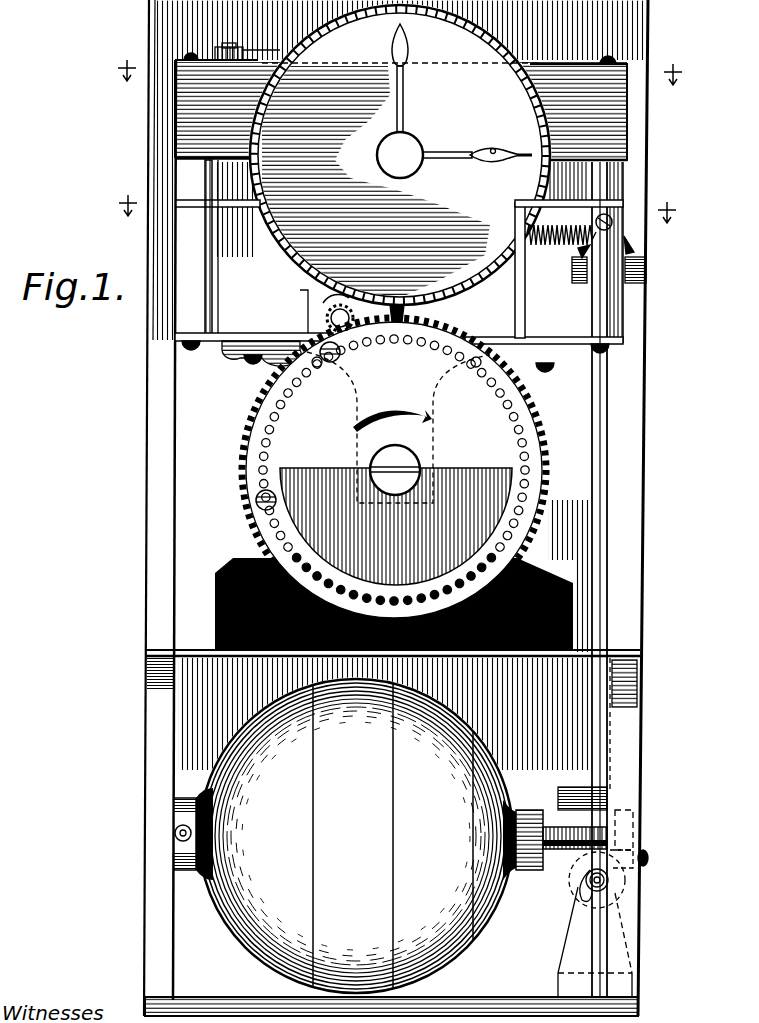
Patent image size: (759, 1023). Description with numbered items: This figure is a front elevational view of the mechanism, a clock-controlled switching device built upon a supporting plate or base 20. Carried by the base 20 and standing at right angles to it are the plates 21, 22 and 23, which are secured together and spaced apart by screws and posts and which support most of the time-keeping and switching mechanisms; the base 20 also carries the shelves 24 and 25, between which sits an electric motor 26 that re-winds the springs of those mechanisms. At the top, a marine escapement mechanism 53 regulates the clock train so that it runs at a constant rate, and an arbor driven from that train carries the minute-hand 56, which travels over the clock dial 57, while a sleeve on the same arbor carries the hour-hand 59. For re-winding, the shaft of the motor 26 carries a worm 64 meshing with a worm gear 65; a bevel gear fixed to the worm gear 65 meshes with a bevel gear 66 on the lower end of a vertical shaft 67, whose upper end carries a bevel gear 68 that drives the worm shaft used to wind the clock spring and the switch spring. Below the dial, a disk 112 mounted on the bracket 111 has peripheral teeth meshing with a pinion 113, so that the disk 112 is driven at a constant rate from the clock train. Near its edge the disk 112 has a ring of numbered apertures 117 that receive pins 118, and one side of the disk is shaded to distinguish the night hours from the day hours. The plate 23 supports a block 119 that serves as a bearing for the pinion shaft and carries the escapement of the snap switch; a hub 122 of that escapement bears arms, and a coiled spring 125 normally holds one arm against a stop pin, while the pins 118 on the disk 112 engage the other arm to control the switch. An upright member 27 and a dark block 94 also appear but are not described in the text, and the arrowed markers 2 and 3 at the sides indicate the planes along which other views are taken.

The section line 2- 2 is at (398, 71).
The section line 3- 3 is at (399, 204).
The supporting plate or base 20 is at (628, 420).
The plate 21 is at (174, 78).
The plate 22 is at (180, 205).
The plate 23 is at (174, 338).
The plate or shelf 24 is at (150, 660).
The plate or shelf 25 is at (148, 1002).
The electric motor 26 is at (356, 836).
The upright bar 27 is at (522, 322).
The marine escapement mechanism 53 is at (212, 45).
The minute-hand 56 is at (403, 128).
The clock dial 57 is at (477, 168).
The hour-hand 59 is at (492, 150).
The worm 64 is at (558, 862).
The worm gear 65 is at (580, 885).
The bevel gear 66 is at (648, 860).
The shaft 67 is at (600, 566).
The bevel gear 68 is at (634, 251).
The block 94 is at (215, 600).
The bracket 111 is at (241, 355).
The disk 112 is at (258, 432).
The pinion 113 is at (389, 320).
The apertures 117 is at (272, 513).
The pins 118 is at (340, 355).
The block 119 is at (300, 290).
The hub 122 is at (327, 317).
The coiled spring 125 is at (556, 246).